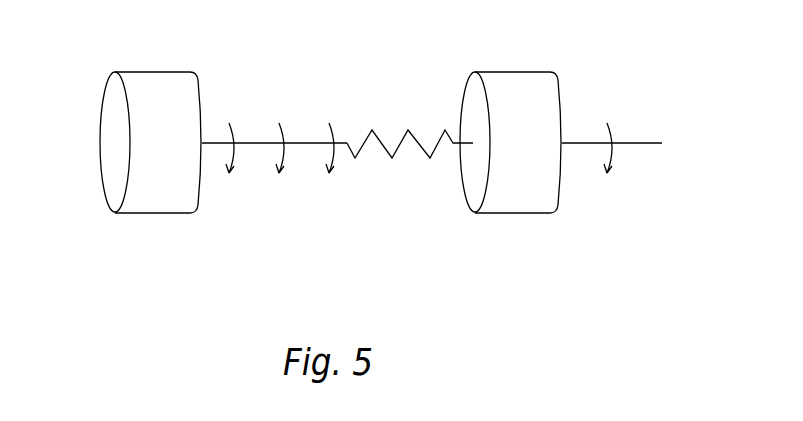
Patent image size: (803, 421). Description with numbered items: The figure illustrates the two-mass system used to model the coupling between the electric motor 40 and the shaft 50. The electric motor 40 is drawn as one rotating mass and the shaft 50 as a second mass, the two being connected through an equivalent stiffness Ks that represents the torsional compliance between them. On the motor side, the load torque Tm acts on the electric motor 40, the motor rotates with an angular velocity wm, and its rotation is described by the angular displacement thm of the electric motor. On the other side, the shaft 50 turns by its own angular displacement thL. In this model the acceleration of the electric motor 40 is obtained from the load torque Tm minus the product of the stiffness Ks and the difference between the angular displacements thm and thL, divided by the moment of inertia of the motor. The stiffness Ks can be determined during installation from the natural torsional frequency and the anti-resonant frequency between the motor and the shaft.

The electric motor 40 is at (140, 87).
The shaft 50 is at (508, 87).
The load torque of the electric motor Tm is at (230, 169).
The motor angular velocity wm is at (282, 169).
The angular displacement of the electric motor thm is at (330, 170).
The equivalent stiffness Ks is at (410, 120).
The angular displacement of the shaft thL is at (612, 170).